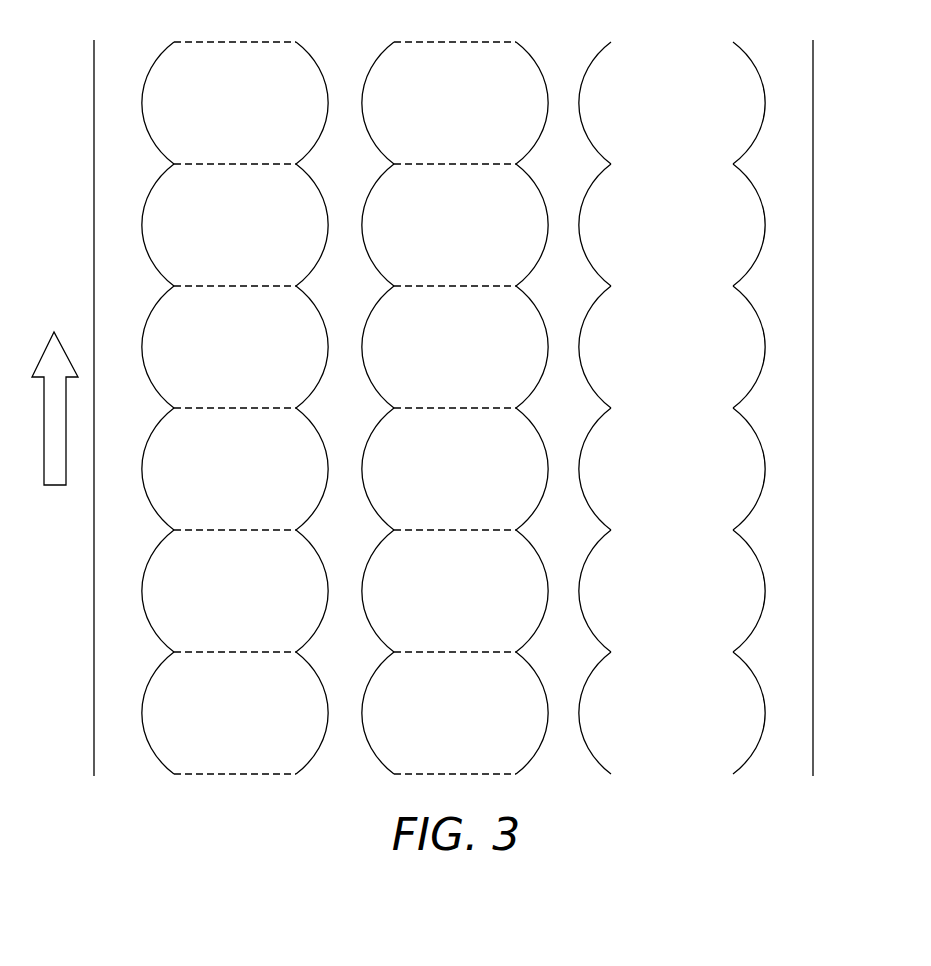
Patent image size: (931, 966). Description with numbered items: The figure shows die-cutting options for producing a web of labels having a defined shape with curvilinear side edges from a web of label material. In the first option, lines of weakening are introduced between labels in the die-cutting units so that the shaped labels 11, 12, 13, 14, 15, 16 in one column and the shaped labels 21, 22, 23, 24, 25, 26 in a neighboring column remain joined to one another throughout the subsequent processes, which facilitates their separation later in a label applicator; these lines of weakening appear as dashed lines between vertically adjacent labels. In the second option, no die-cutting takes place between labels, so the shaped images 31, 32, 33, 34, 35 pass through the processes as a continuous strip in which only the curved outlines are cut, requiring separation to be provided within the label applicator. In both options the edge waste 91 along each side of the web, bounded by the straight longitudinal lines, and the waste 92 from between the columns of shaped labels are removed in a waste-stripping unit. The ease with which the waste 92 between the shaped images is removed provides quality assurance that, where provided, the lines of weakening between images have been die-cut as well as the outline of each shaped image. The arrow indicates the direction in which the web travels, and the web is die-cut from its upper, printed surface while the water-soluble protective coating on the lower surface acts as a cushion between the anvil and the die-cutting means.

The shaped label 11 is at (235, 103).
The shaped label 12 is at (235, 225).
The shaped label 13 is at (235, 347).
The shaped label 14 is at (235, 469).
The shaped label 15 is at (235, 591).
The shaped label 16 is at (235, 713).
The shaped label 21 is at (455, 103).
The shaped label 22 is at (455, 225).
The shaped label 23 is at (455, 347).
The shaped label 24 is at (455, 469).
The shaped label 25 is at (455, 591).
The shaped label 26 is at (563, 713).
The shaped image 31 is at (672, 103).
The shaped image 32 is at (672, 225).
The shaped image 33 is at (672, 347).
The shaped image 34 is at (672, 469).
The shaped image 35 is at (672, 591).
The edge waste 91 is at (105, 225).
The waste from between rows of shaped labels 92 is at (332, 419).